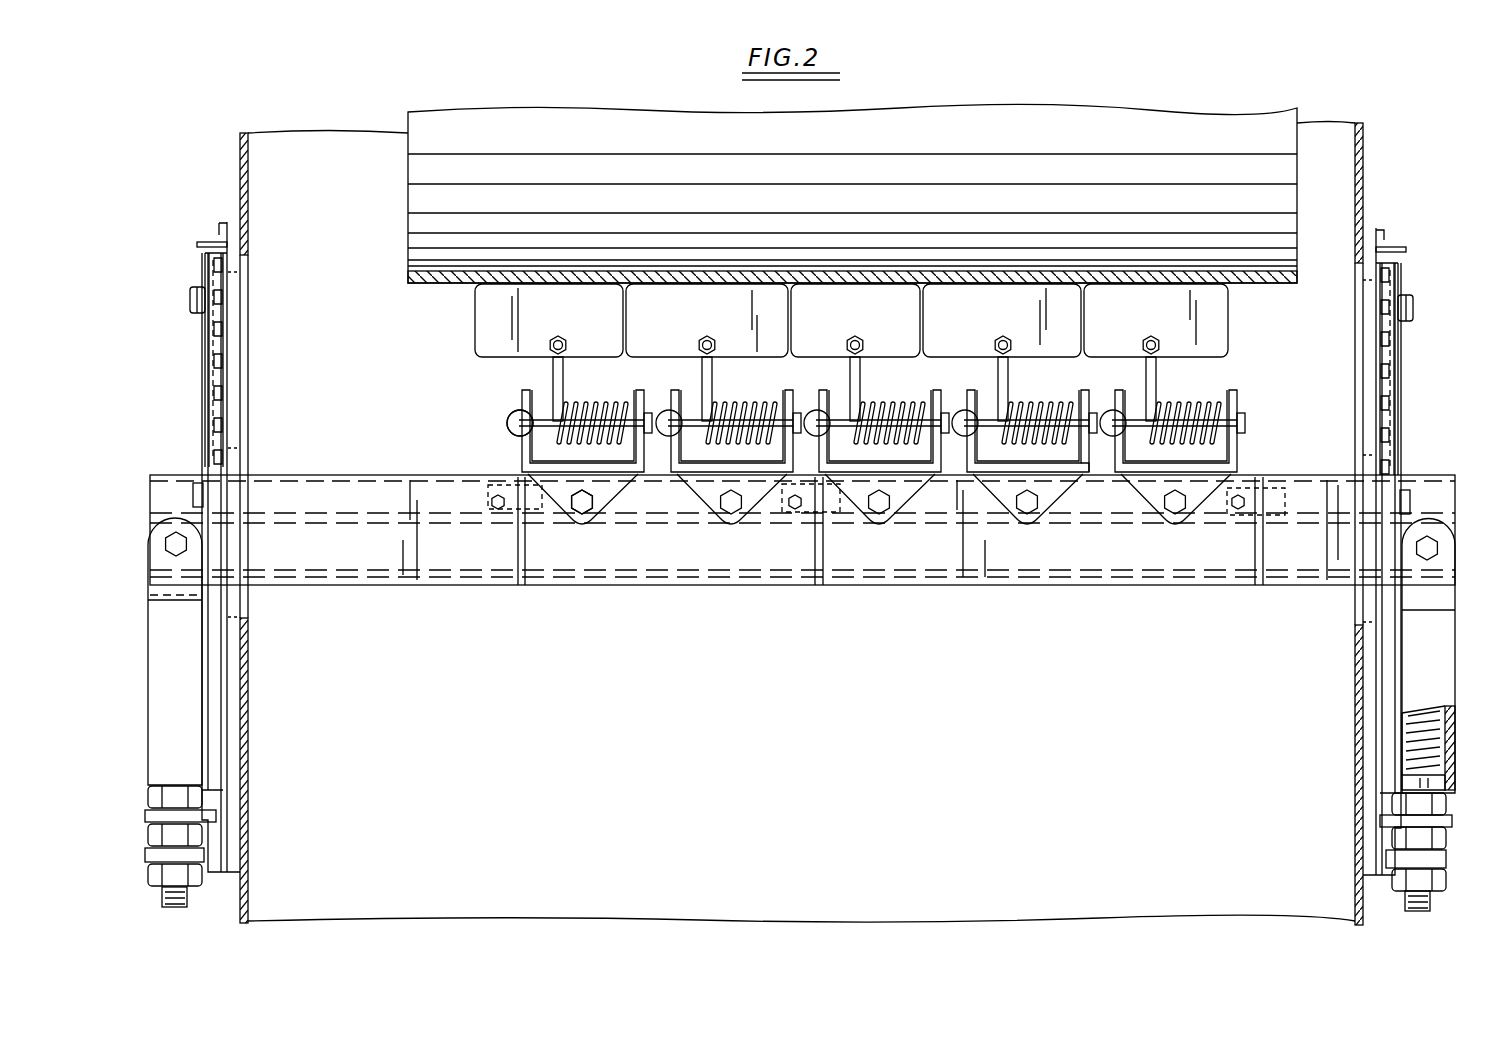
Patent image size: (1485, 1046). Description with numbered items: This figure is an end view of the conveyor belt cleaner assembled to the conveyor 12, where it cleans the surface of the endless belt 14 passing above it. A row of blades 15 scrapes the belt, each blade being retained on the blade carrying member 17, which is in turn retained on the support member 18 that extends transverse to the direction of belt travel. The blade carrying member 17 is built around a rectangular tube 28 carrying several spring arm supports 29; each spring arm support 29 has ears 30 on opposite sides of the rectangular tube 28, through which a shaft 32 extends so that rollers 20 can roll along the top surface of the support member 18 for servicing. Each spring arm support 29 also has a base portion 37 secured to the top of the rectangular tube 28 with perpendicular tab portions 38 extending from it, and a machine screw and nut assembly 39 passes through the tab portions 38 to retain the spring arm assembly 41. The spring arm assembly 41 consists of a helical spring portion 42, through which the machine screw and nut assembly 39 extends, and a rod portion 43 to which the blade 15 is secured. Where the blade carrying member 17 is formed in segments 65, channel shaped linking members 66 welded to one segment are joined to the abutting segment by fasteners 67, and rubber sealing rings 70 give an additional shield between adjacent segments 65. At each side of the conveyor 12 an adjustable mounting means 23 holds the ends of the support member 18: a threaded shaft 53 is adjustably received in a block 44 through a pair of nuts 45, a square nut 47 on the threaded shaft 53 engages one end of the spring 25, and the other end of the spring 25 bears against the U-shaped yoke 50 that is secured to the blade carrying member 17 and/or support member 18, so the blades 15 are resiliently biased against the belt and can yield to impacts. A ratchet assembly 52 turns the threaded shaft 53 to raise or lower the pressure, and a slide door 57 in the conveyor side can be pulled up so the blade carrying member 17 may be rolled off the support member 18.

The conveyor 12 is at (337, 145).
The endless belt 14 is at (449, 283).
The blade 15 is at (578, 319).
The blade carrying member 17 is at (172, 477).
The support member 18 is at (215, 512).
The roller 20 is at (731, 516).
The adjustable mounting means 23 is at (250, 684).
The spring 25 is at (1400, 750).
The rectangular tube 28 is at (373, 492).
The spring arm support 29 is at (512, 425).
The ear 30 is at (606, 500).
The shaft 32 is at (578, 523).
The base portion 37 is at (628, 478).
The tab portion 38 is at (800, 400).
The machine screw and nut assembly 39 is at (983, 412).
The spring arm assembly 41 is at (1040, 405).
The helical spring portion 42 is at (602, 405).
The rod portion 43 is at (856, 380).
The block 44 is at (1390, 842).
The nut 45 is at (1395, 845).
The square nut 47 is at (1420, 788).
The U-shaped yoke 50 is at (192, 556).
The ratchet assembly 52 is at (201, 868).
The threaded shaft 53 is at (1412, 900).
The slide door 57 is at (207, 243).
The segment 65 is at (687, 575).
The linking member 66 is at (500, 486).
The fastener 67 is at (497, 512).
The rubber sealing ring 70 is at (514, 565).